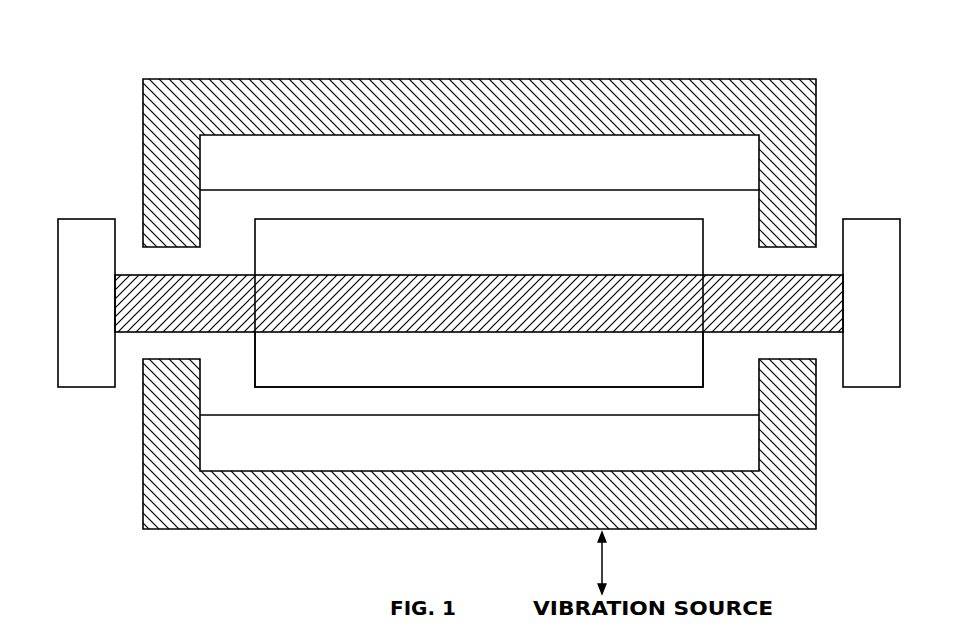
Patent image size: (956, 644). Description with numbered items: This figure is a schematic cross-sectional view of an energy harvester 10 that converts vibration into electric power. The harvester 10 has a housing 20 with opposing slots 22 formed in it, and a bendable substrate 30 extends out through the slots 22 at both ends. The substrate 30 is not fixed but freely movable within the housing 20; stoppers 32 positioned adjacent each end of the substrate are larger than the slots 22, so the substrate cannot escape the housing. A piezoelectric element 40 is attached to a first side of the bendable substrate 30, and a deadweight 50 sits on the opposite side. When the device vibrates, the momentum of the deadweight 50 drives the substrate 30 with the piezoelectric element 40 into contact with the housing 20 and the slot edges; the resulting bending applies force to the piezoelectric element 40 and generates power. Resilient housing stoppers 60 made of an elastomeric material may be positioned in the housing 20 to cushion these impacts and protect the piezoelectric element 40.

The energy harvester 10 is at (58, 72).
The housing 20 is at (175, 90).
The slots 22 is at (131, 378).
The bendable substrate 30 is at (340, 293).
The stoppers 32 is at (77, 236).
The piezoelectric element 40 is at (373, 235).
The deadweight 50 is at (472, 352).
The housing stoppers 60 is at (723, 157).